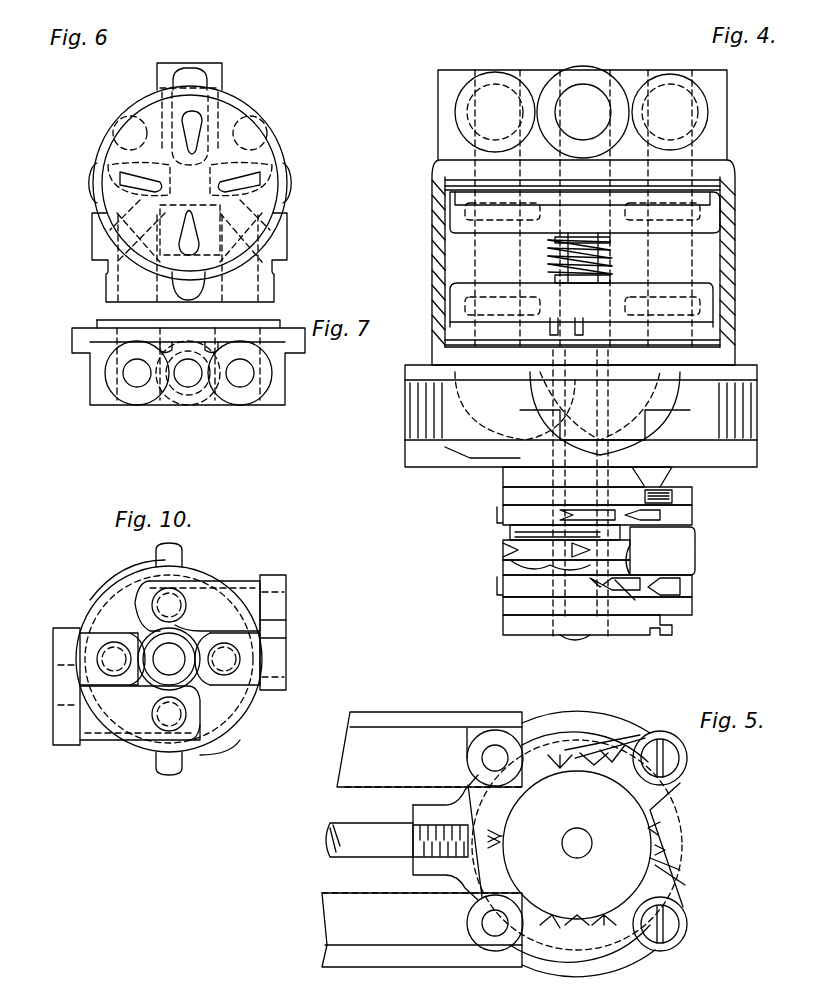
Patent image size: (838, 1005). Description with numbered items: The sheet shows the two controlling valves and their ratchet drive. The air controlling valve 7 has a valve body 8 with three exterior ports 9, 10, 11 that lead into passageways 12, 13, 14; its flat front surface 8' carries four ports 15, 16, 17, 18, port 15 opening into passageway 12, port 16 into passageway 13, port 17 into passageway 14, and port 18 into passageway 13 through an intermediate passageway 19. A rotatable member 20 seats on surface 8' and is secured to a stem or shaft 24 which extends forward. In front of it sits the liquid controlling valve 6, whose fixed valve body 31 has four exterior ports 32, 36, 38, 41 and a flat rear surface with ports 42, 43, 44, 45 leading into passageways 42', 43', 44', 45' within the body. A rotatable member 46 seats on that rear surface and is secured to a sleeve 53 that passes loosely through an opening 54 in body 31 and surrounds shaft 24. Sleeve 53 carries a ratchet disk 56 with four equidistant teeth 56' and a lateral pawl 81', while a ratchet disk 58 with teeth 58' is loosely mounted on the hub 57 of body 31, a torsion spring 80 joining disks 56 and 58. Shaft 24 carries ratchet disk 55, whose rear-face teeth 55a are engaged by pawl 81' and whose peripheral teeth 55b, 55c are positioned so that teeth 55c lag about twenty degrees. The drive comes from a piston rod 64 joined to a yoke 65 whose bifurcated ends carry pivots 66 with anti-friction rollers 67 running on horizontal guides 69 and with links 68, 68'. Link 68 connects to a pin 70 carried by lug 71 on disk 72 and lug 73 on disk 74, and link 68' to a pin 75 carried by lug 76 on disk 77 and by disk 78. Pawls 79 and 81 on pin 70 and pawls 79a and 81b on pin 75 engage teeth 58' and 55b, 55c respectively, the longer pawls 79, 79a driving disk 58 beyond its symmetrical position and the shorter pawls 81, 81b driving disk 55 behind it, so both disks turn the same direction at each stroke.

In FIG. 6, the valve 6 is at (290, 159).
In FIG. 4, the valve 6 is at (758, 373).
In FIG. 4, the air controlling valve 7 is at (440, 88).
In FIG. 7, the valve body 8 is at (191, 362).
In FIG. 4, the valve body 8 is at (591, 250).
In FIG. 6, the front surface 8' is at (211, 133).
In FIG. 6, the exterior port 9 is at (179, 64).
In FIG. 7, the exterior port 9 is at (187, 408).
In FIG. 4, the exterior port 9 is at (590, 86).
In FIG. 6, the exterior port 10 is at (128, 302).
In FIG. 7, the exterior port 10 is at (135, 384).
In FIG. 4, the exterior port 10 is at (487, 70).
In FIG. 6, the exterior port 11 is at (252, 300).
In FIG. 7, the exterior port 11 is at (240, 384).
In FIG. 4, the exterior port 11 is at (690, 72).
In FIG. 6, the passageway 12 is at (228, 108).
In FIG. 6, the passageway 13 is at (95, 267).
In FIG. 6, the passageway 14 is at (283, 262).
In FIG. 6, the port 15 is at (196, 132).
In FIG. 6, the port 16 is at (135, 184).
In FIG. 6, the port 17 is at (254, 185).
In FIG. 6, the port 18 is at (196, 233).
In FIG. 6, the intermediate passageway 19 is at (95, 288).
In FIG. 4, the rotatable member 20 is at (470, 233).
In FIG. 4, the stem or shaft 24 is at (600, 262).
In FIG. 5, the stem or shaft 24 is at (582, 852).
In FIG. 10, the valve body 31 is at (196, 566).
In FIG. 4, the valve body 31 is at (408, 458).
In FIG. 10, the exterior port 32 is at (62, 702).
In FIG. 10, the exterior port 36 is at (55, 650).
In FIG. 4, the exterior port 36 is at (405, 418).
In FIG. 10, the exterior port 38 is at (288, 672).
In FIG. 10, the exterior port 41 is at (282, 596).
In FIG. 4, the exterior port 41 is at (757, 430).
In FIG. 10, the port 42 is at (140, 737).
In FIG. 10, the passageway 42' is at (99, 761).
In FIG. 10, the port 43 is at (125, 578).
In FIG. 10, the passageway 43' is at (63, 613).
In FIG. 4, the passageway 43' is at (411, 377).
In FIG. 10, the port 44 is at (238, 730).
In FIG. 10, the passageway 44' is at (286, 704).
In FIG. 10, the port 45 is at (200, 591).
In FIG. 10, the passageway 45' is at (293, 566).
In FIG. 4, the passageway 45' is at (755, 391).
In FIG. 4, the rotatable member 46 is at (680, 288).
In FIG. 4, the sleeve 53 is at (640, 380).
In FIG. 4, the opening 54 is at (520, 418).
In FIG. 4, the ratchet disk 55 is at (510, 592).
In FIG. 4, the ratchets or teeth 55a is at (503, 575).
In FIG. 4, the ratchets or teeth 55b is at (503, 585).
In FIG. 5, the ratchets or teeth 55b is at (492, 850).
In FIG. 4, the ratchets or teeth 55c is at (605, 585).
In FIG. 5, the ratchets or teeth 55c is at (604, 768).
In FIG. 4, the ratchet disk 56 is at (538, 552).
In FIG. 4, the ratchets or teeth 56' is at (573, 551).
In FIG. 5, the ratchets or teeth 56' is at (580, 850).
In FIG. 4, the projection or hub 57 is at (503, 470).
In FIG. 4, the ratchet disk 58 is at (544, 529).
In FIG. 4, the ratchets or teeth 58' is at (603, 514).
In FIG. 5, the ratchets or teeth 58' is at (577, 842).
In FIG. 5, the piston rod 64 is at (350, 830).
In FIG. 5, the yoke 65 is at (415, 868).
In FIG. 5, the pivot 66 is at (492, 758).
In FIG. 5, the anti-friction roller 67 is at (477, 763).
In FIG. 5, the link 68 is at (577, 823).
In FIG. 5, the link 68' is at (582, 956).
In FIG. 4, the horizontal guide 69 is at (548, 263).
In FIG. 5, the horizontal guide 69 is at (388, 720).
In FIG. 5, the pin 70 is at (680, 762).
In FIG. 4, the lug 71 is at (694, 498).
In FIG. 4, the disk 72 is at (503, 480).
In FIG. 4, the lug 73 is at (694, 608).
In FIG. 5, the lug 73 is at (676, 776).
In FIG. 4, the disk 74 is at (526, 630).
In FIG. 5, the disk 74 is at (577, 845).
In FIG. 5, the pin 75 is at (681, 932).
In FIG. 5, the lug 76 is at (681, 918).
In FIG. 4, the disk 77 is at (503, 606).
In FIG. 4, the disk 78 is at (503, 498).
In FIG. 4, the pawl 79 is at (673, 479).
In FIG. 5, the pawl 79 is at (612, 748).
In FIG. 5, the pawl 79a is at (662, 866).
In FIG. 4, the torsion spring 80 is at (515, 535).
In FIG. 4, the pawl 81 is at (681, 609).
In FIG. 5, the pawl 81 is at (624, 733).
In FIG. 4, the pawl 81' is at (500, 569).
In FIG. 5, the pawl 81b is at (668, 880).